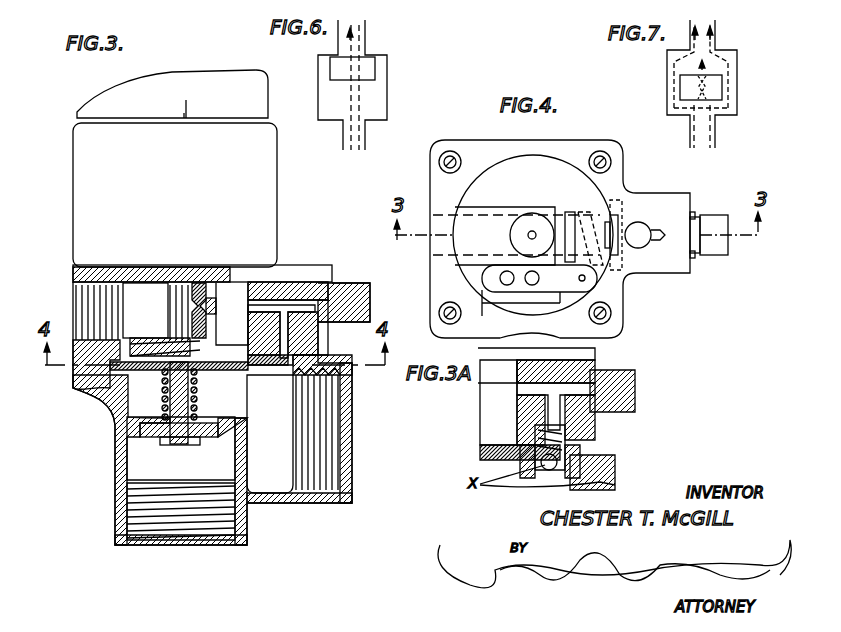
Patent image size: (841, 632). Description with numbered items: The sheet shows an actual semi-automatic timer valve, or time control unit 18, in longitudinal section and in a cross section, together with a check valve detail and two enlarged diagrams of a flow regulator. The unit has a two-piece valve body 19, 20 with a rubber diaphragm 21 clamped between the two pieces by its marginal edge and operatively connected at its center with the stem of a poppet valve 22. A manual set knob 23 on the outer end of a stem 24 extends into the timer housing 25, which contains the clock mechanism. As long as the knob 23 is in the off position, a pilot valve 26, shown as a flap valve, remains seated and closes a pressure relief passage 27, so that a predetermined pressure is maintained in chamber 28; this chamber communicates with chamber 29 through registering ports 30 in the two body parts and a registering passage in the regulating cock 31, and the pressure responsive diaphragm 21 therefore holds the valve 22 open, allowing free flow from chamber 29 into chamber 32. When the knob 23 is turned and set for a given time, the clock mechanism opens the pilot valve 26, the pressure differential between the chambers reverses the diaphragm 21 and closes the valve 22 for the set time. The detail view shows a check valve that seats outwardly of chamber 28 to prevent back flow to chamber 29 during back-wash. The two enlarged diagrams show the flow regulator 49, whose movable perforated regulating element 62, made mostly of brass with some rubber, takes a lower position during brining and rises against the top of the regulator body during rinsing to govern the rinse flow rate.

In FIG. 3, the time control unit 18 is at (82, 240).
In FIG. 4, the time control unit 18 is at (620, 298).
In FIG. 3A, the time control unit 18 is at (492, 402).
In FIG. 3, the valve body part 19 is at (105, 408).
In FIG. 3A, the valve body part 19 is at (612, 466).
In FIG. 3, the valve body part 20 is at (286, 268).
In FIG. 4, the valve body part 20 is at (437, 285).
In FIG. 3A, the valve body part 20 is at (598, 352).
In FIG. 3, the rubber diaphragm 21 is at (226, 370).
In FIG. 3A, the rubber diaphragm 21 is at (480, 458).
In FIG. 3, the poppet valve 22 is at (152, 440).
In FIG. 3, the manual set knob 23 is at (142, 106).
In FIG. 3, the stem 24 is at (175, 118).
In FIG. 3, the timer housing 25 is at (262, 178).
In FIG. 3, the pilot valve 26 is at (205, 320).
In FIG. 4, the pilot valve 26 is at (571, 212).
In FIG. 3, the pressure relief passage 27 is at (136, 300).
In FIG. 4, the pressure relief passage 27 is at (498, 215).
In FIG. 3, the chamber 28 is at (222, 295).
In FIG. 4, the chamber 28 is at (552, 165).
In FIG. 3A, the chamber 28 is at (497, 415).
In FIG. 3, the chamber 29 is at (270, 434).
In FIG. 3A, the chamber 29 is at (520, 485).
In FIG. 3, the registering ports 30 is at (292, 350).
In FIG. 4, the registering ports 30 is at (638, 222).
In FIG. 3A, the registering ports 30 is at (565, 455).
In FIG. 3, the regulating cock 31 is at (346, 296).
In FIG. 4, the regulating cock 31 is at (708, 214).
In FIG. 3A, the regulating cock 31 is at (628, 386).
In FIG. 3, the chamber 32 is at (181, 448).
In FIG. 6, the flow regulator 49 is at (388, 97).
In FIG. 7, the flow regulator 49 is at (667, 88).
In FIG. 6, the movable perforated regulating element 62 is at (372, 68).
In FIG. 7, the movable perforated regulating element 62 is at (722, 88).